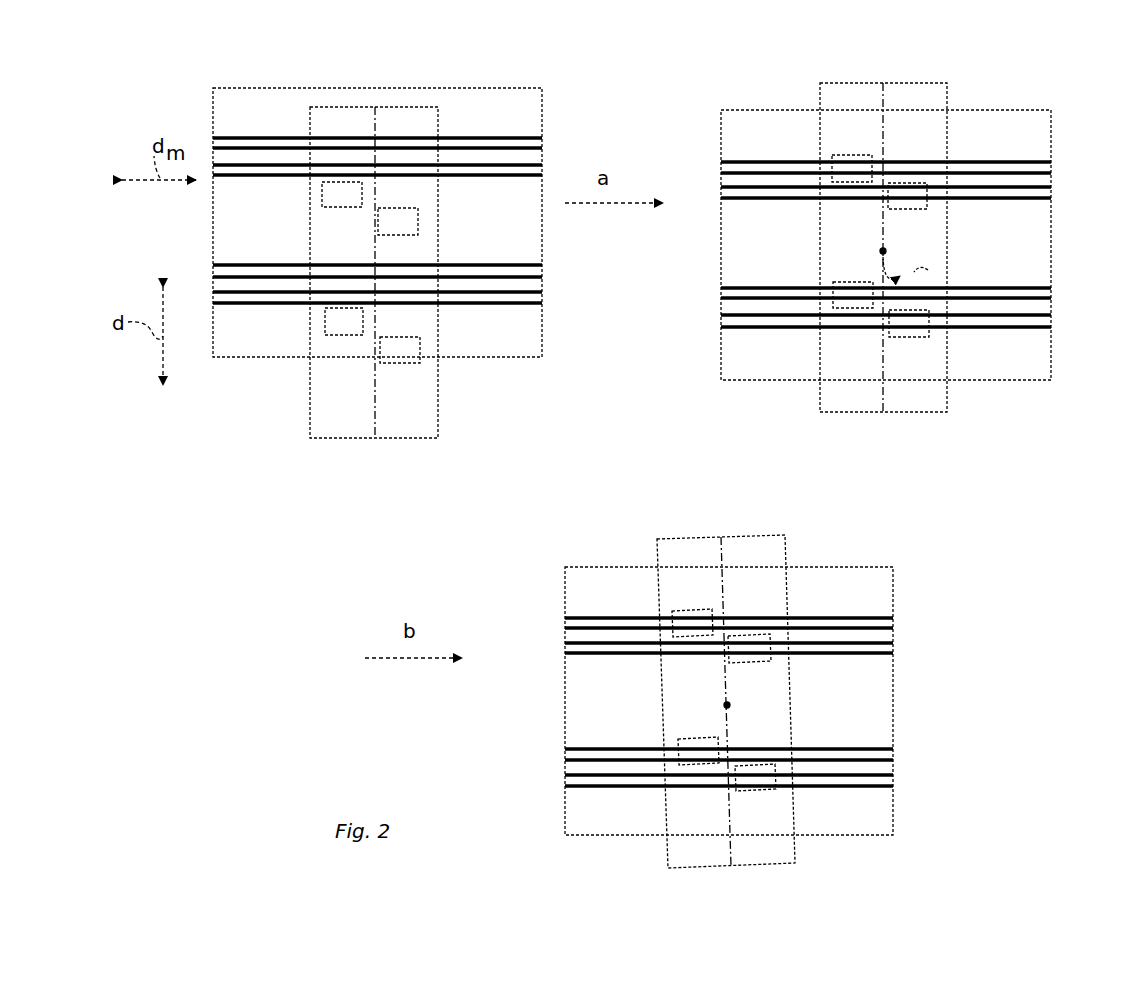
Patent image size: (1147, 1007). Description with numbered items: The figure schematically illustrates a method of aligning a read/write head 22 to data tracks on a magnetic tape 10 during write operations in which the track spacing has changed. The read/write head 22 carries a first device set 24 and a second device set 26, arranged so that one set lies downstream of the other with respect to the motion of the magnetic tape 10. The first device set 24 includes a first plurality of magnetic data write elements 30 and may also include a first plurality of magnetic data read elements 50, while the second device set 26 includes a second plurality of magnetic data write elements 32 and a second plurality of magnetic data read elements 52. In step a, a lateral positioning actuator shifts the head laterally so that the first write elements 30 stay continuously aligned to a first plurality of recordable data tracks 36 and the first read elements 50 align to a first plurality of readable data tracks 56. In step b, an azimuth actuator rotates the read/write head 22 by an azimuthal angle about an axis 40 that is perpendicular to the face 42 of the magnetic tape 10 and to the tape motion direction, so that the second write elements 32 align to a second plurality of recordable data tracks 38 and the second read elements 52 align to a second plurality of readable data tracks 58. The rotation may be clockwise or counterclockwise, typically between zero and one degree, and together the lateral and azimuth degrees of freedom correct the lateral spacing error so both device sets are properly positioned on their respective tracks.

The magnetic tape 10 is at (516, 88).
The read/write head 22 is at (438, 108).
The first device set 24 is at (336, 107).
The second device set 26 is at (375, 107).
The first plurality of magnetic data write elements 30 is at (340, 188).
The second plurality of magnetic data write elements 32 is at (398, 215).
The first plurality of recordable data tracks 36 is at (223, 138).
The second plurality of recordable data tracks 38 is at (528, 166).
The axis 40 is at (880, 250).
The face 42 is at (1017, 262).
The first plurality of magnetic data read elements 50 is at (343, 314).
The second plurality of magnetic data read elements 52 is at (400, 355).
The first plurality of readable data tracks 56 is at (225, 265).
The second plurality of readable data tracks 58 is at (530, 293).